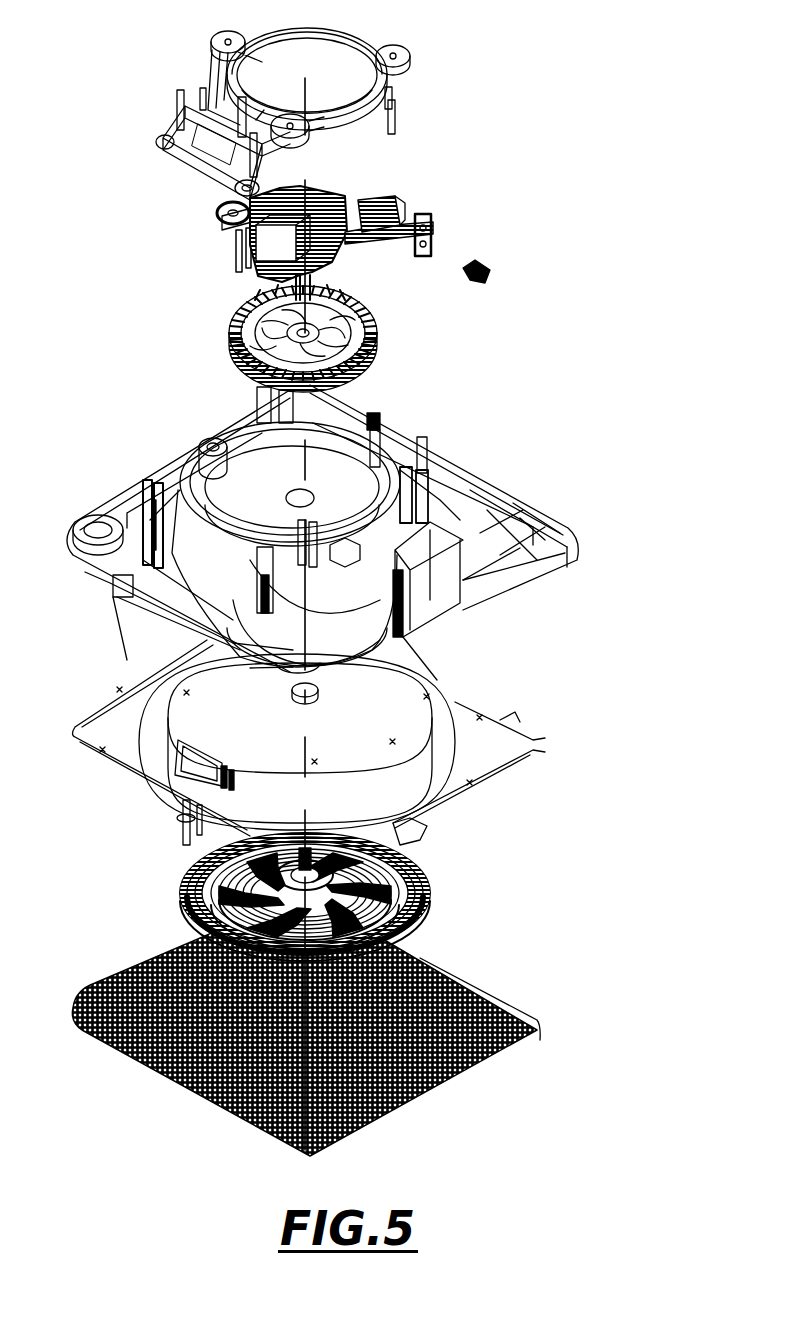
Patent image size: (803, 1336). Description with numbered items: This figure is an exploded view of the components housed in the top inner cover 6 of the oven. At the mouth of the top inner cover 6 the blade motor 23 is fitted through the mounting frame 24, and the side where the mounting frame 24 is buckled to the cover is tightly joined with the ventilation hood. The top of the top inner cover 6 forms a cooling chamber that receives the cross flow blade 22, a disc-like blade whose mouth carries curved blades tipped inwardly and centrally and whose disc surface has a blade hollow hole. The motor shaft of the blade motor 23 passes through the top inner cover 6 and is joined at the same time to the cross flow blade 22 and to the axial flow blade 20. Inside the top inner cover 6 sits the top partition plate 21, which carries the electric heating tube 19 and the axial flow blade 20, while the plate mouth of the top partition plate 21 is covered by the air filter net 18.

The mounting frame 24 is at (207, 80).
The blade motor 23 is at (222, 217).
The cross flow blade 22 is at (228, 325).
The top inner cover 6 is at (467, 465).
The top partition plate 21 is at (500, 726).
The axial flow blade 20 is at (427, 832).
The electric heating tube 19 is at (423, 893).
The air filter net 18 is at (527, 1014).